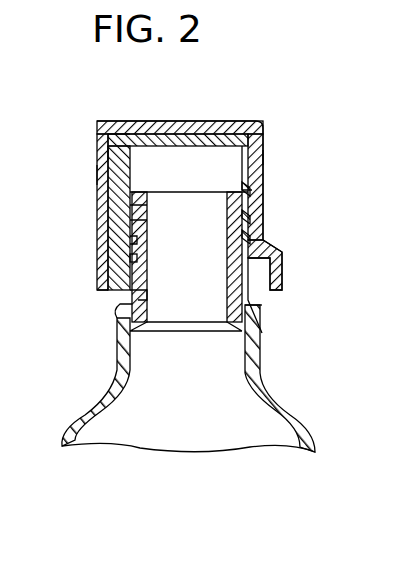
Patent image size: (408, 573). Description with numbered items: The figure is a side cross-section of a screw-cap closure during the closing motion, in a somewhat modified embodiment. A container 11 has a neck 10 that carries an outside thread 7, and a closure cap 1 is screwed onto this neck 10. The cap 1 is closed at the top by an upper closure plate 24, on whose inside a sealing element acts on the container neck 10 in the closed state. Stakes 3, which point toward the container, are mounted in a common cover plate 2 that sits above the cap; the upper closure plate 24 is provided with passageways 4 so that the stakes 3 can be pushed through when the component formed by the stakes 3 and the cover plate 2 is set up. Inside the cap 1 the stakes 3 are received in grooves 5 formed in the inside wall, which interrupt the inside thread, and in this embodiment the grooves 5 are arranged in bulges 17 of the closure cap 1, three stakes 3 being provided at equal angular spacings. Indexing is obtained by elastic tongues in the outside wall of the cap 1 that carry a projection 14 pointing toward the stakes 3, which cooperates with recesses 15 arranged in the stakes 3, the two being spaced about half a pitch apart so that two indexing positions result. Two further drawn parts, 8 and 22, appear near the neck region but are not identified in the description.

The closure cap 1 is at (265, 158).
The cover plate 2 is at (249, 122).
The stakes 3 is at (110, 157).
The passageways 4 is at (130, 140).
The grooves 5 is at (110, 295).
The outside thread 7 is at (110, 213).
The neck bead 8 is at (117, 302).
The container neck 10 is at (146, 208).
The container 11 is at (313, 455).
The projection 14 is at (98, 242).
The recesses 15 is at (105, 258).
The bulges 17 is at (102, 173).
The bottle neck 22 is at (255, 313).
The upper closure plate 24 is at (205, 138).